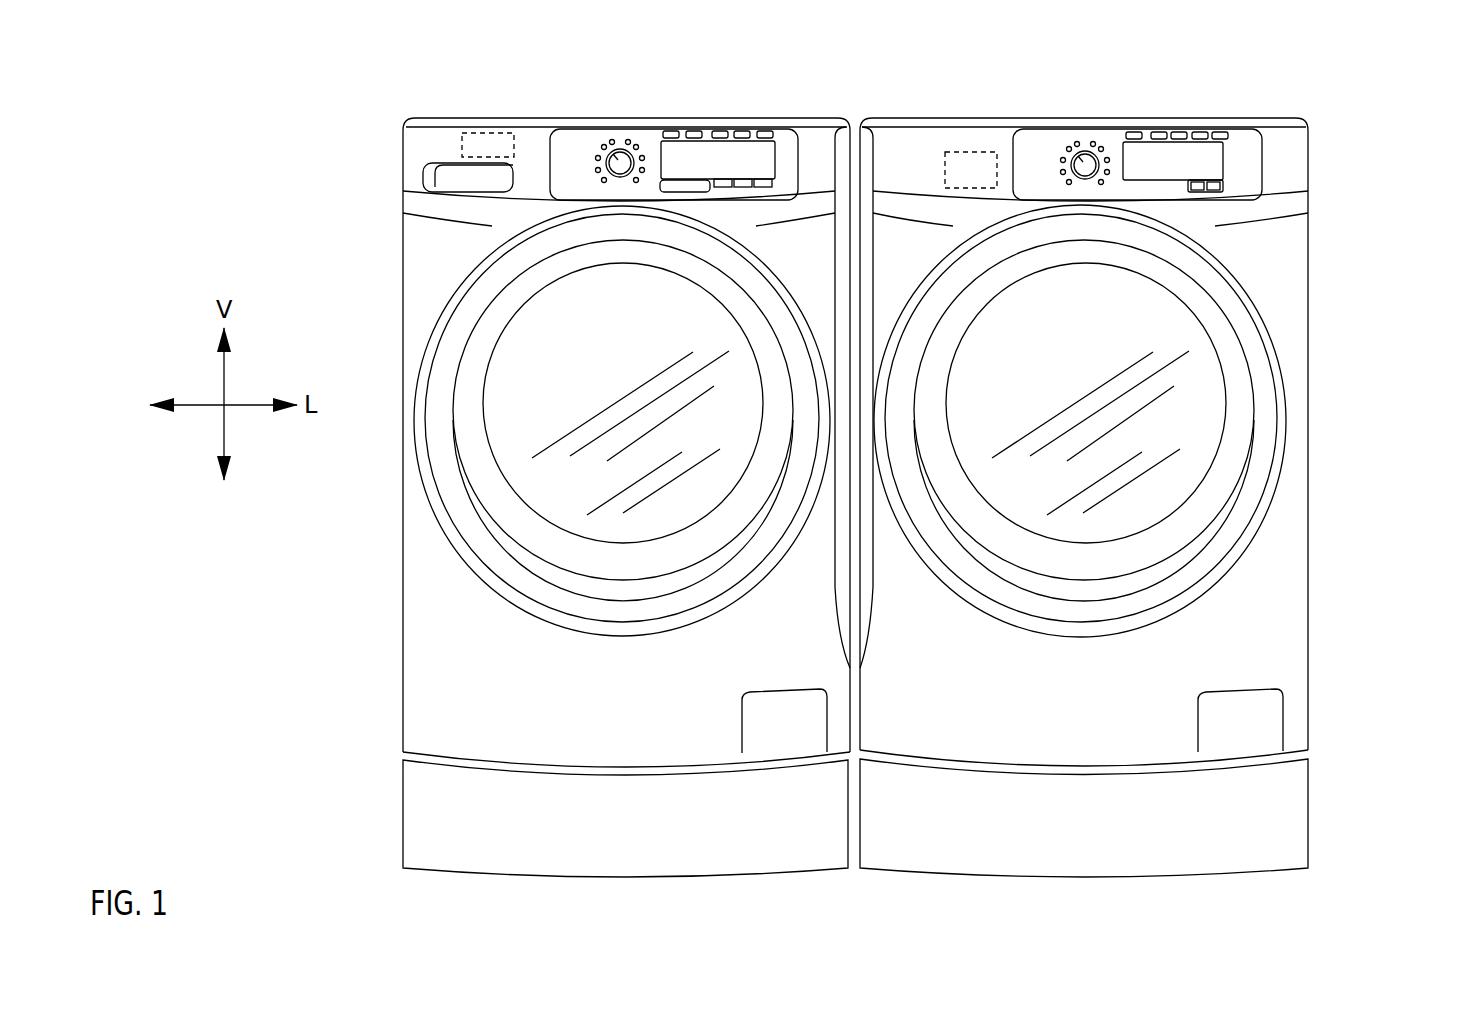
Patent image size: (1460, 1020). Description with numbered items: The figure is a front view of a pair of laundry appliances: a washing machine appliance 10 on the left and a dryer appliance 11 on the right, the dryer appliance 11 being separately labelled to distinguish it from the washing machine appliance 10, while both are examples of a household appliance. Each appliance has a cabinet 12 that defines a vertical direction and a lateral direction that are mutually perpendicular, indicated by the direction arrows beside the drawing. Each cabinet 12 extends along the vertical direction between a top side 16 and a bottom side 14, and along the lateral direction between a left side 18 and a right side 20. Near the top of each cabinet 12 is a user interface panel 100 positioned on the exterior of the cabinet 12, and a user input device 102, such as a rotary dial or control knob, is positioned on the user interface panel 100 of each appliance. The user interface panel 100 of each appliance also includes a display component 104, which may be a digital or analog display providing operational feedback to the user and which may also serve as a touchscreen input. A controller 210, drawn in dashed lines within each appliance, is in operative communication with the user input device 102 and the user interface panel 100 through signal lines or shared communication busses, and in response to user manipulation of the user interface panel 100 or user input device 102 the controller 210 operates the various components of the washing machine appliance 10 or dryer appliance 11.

The washing machine appliance 10 is at (272, 82).
The dryer appliance 11 is at (1330, 160).
The cabinet 12 is at (415, 630).
The bottom side 14 is at (478, 888).
The top side 16 is at (466, 113).
The left side 18 is at (385, 798).
The right side 20 is at (845, 885).
The user interface panel 100 is at (647, 140).
The user input device 102 is at (611, 160).
The display component 104 is at (763, 163).
The controller 210 is at (503, 142).